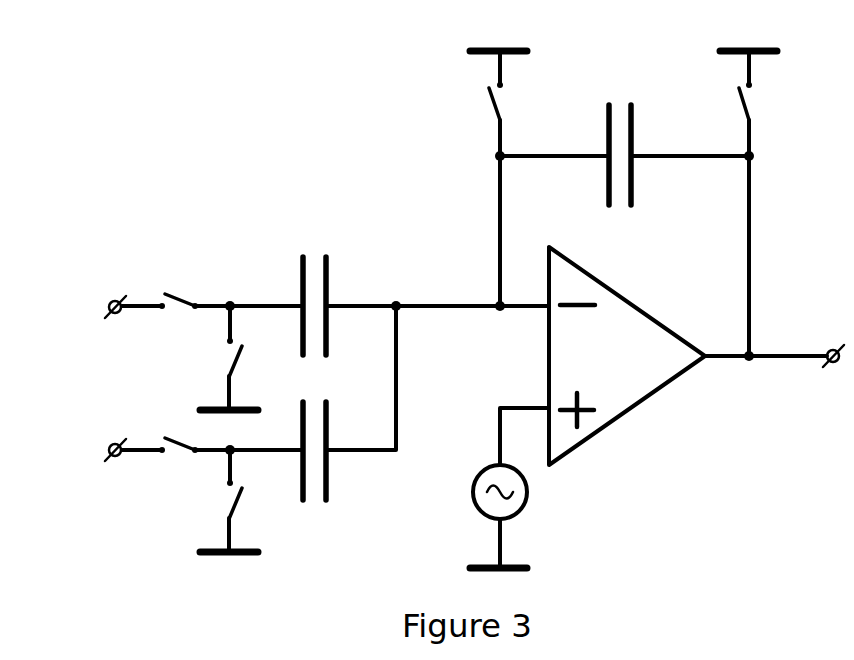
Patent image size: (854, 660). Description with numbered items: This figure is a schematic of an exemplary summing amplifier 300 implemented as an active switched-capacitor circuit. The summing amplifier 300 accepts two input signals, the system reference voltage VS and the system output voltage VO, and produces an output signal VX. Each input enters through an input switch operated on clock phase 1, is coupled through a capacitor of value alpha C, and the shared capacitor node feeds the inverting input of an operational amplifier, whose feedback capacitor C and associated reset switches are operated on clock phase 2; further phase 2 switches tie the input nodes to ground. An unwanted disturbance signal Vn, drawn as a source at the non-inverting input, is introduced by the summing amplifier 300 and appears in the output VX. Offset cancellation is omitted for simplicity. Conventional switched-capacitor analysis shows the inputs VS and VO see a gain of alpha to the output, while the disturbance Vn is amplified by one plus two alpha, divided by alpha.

The summing amplifier 300 is at (324, 137).
The phase-1 (φ1) switches 1 is at (167, 246).
The phase-2 (φ2) switches 2 is at (783, 80).